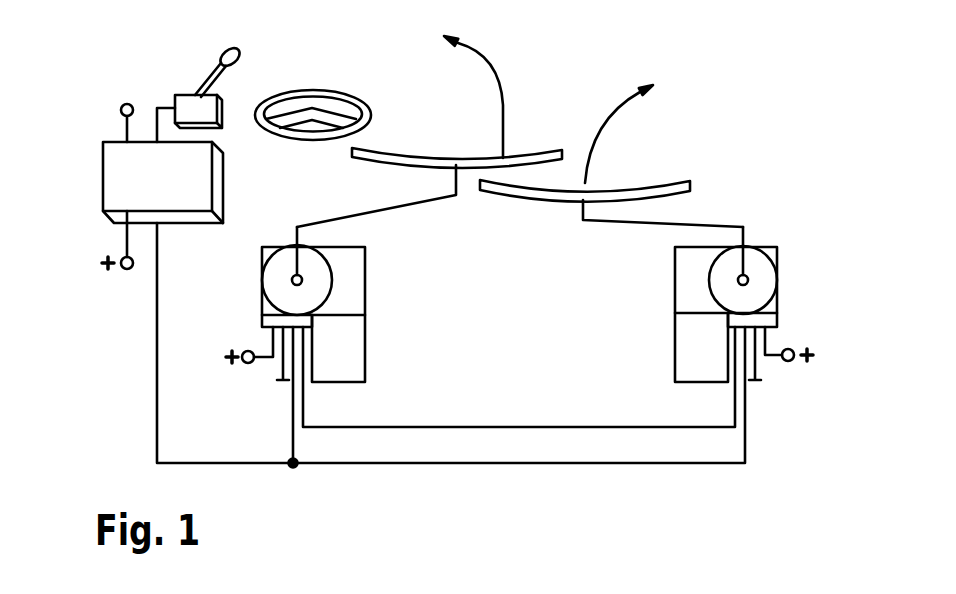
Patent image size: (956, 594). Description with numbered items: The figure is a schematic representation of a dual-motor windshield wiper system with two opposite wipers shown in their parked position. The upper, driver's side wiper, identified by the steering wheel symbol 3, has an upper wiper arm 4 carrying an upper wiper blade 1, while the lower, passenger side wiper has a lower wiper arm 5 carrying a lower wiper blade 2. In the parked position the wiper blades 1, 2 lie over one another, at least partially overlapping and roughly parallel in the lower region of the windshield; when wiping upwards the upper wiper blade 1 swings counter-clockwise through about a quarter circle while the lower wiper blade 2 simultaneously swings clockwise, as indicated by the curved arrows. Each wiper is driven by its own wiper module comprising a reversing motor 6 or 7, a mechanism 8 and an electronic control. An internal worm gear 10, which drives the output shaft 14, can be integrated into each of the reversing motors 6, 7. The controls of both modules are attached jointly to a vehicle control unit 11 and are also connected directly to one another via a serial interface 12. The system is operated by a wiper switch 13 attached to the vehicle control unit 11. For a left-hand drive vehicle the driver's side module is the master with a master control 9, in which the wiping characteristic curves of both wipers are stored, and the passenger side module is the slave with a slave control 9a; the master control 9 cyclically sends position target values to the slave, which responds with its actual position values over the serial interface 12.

The upper wiper blade 1 is at (481, 158).
The lower wiper blade 2 is at (670, 180).
The steering wheel symbol 3 is at (338, 90).
The upper wiper arm 4 is at (413, 207).
The lower wiper arm 5 is at (724, 226).
The reversing motor 6 is at (356, 363).
The reversing motor 7 is at (682, 358).
The mechanism 8 is at (295, 235).
The electronic control 9 is at (270, 316).
The slave control 9a is at (772, 318).
The internal worm gear 10 is at (356, 282).
The vehicle control unit 11 is at (117, 177).
The serial interface 12 is at (502, 428).
The wiper switch 13 is at (188, 103).
The output shaft 14 is at (292, 280).